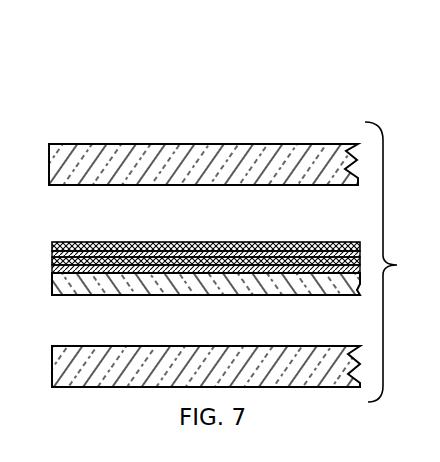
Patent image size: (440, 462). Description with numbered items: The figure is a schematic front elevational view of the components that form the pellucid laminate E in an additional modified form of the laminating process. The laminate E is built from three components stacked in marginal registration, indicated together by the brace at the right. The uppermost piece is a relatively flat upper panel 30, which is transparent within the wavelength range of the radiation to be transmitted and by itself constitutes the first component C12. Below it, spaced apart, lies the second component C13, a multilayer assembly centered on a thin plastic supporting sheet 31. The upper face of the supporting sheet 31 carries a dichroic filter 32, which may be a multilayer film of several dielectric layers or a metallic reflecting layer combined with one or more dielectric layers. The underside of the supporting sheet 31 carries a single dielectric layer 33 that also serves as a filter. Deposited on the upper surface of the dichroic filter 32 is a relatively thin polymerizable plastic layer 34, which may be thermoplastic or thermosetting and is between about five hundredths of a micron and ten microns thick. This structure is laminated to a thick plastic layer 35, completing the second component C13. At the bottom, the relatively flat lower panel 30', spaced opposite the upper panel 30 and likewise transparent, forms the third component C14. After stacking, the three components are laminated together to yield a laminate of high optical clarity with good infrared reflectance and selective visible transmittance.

The laminate E is at (203, 128).
The first component C12 is at (153, 142).
The second component C13 is at (174, 238).
The third component C14 is at (213, 345).
The upper panel 30 is at (203, 146).
The lower panel 30' is at (206, 381).
The thin plastic supporting sheet 31 is at (52, 262).
The dichroic filter 32 is at (52, 254).
The dielectric layer 33 is at (52, 269).
The plastic polymerizable layer 34 is at (90, 242).
The plastic layer 35 is at (88, 296).